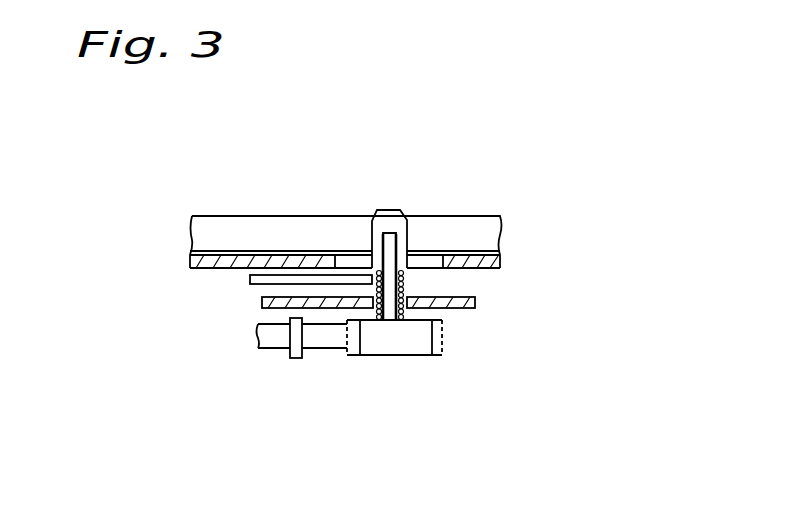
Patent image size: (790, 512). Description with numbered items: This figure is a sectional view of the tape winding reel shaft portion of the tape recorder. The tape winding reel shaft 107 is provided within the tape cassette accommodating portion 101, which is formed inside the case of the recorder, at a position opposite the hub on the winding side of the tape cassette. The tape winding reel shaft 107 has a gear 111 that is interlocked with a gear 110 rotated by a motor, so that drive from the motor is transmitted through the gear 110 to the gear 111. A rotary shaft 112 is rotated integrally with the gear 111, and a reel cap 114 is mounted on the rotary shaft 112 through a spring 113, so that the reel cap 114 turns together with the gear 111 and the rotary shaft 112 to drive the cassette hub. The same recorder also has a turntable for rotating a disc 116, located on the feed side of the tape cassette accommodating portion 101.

The base plate 101 is at (458, 280).
The bore hole 107 is at (397, 240).
The drive rod 110 is at (318, 338).
The cylinder 111 is at (395, 342).
The pin 112 is at (383, 253).
The lower plate 113 is at (407, 280).
The boss 114 is at (392, 222).
The slide bar 116 is at (257, 280).